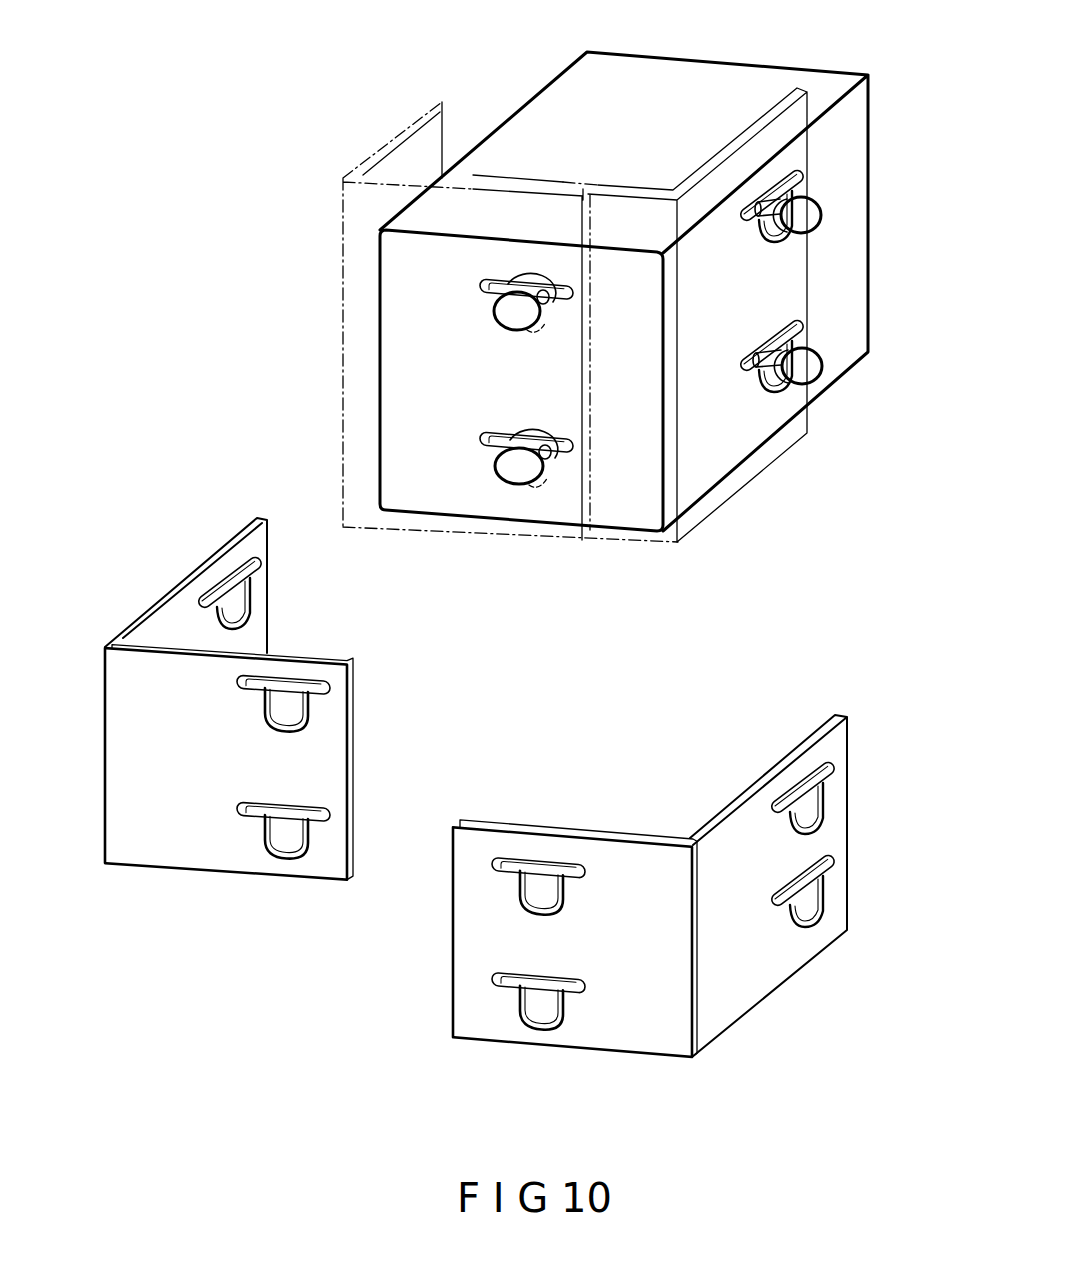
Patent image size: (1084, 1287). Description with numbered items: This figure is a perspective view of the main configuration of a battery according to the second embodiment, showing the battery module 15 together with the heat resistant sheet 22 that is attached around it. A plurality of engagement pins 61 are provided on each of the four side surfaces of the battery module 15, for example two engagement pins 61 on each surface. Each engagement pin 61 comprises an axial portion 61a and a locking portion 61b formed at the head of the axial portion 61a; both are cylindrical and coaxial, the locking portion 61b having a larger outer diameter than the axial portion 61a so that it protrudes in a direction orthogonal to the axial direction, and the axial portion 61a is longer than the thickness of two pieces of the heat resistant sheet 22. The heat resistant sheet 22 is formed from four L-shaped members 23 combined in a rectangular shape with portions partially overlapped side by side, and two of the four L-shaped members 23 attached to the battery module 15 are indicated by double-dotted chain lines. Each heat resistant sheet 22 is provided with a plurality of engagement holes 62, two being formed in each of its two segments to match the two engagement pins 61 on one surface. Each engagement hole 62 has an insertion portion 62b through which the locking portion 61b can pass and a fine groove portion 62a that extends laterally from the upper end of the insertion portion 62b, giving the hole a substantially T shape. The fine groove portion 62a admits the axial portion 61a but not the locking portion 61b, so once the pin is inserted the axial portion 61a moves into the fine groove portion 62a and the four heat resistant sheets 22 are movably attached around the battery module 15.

The battery module 15 is at (876, 160).
The heat resistant sheet 22 is at (636, 1064).
The L-shaped member 23 is at (343, 262).
The engagement pin 61 is at (619, 306).
The axial portion 61a is at (798, 196).
The locking portion 61b is at (812, 232).
The engagement hole 62 is at (494, 560).
The fine groove portion 62a is at (748, 195).
The insertion portion 62b is at (778, 242).